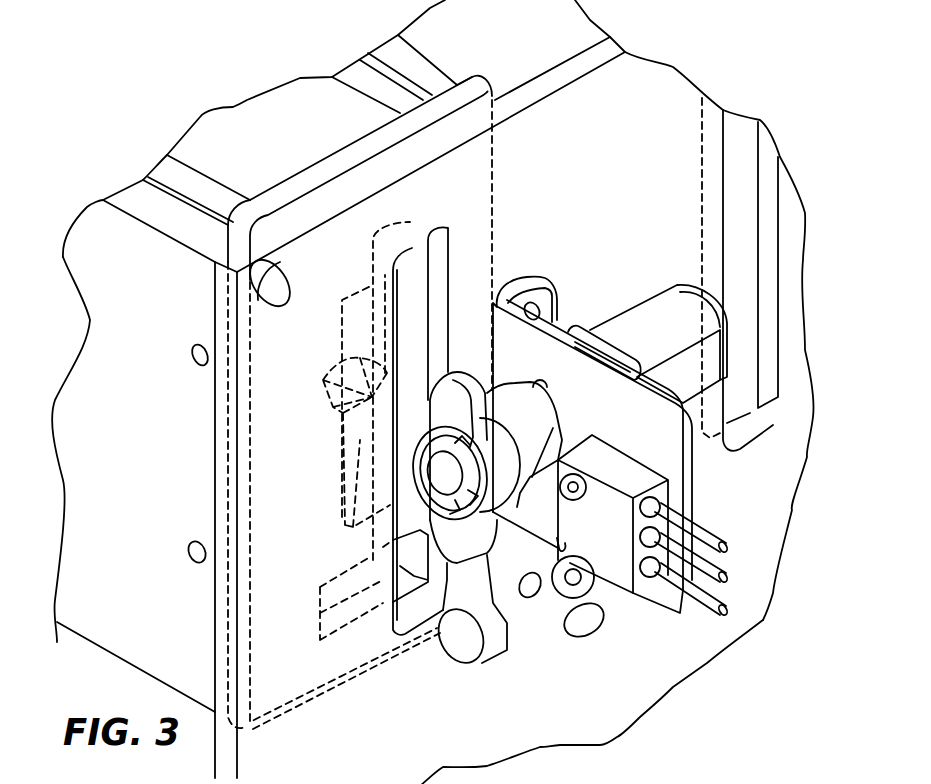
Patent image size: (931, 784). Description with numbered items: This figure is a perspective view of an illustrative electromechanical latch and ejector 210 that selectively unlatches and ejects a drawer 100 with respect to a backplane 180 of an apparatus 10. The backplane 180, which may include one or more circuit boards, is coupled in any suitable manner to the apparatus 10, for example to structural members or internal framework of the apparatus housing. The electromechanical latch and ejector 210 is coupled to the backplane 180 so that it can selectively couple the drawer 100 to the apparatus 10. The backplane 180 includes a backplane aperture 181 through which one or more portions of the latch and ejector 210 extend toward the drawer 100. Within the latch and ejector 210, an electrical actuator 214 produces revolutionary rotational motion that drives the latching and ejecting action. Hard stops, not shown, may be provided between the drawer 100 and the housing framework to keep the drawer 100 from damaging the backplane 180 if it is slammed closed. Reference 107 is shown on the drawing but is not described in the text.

The apparatus 10 is at (755, 80).
The drawer 100 is at (62, 252).
The top edge of door panel 107 is at (476, 55).
The backplane 180 is at (509, 86).
The backplane aperture 181 is at (450, 236).
The electromechanical latch and ejector 210 is at (551, 660).
The electrical actuator 214 is at (591, 702).